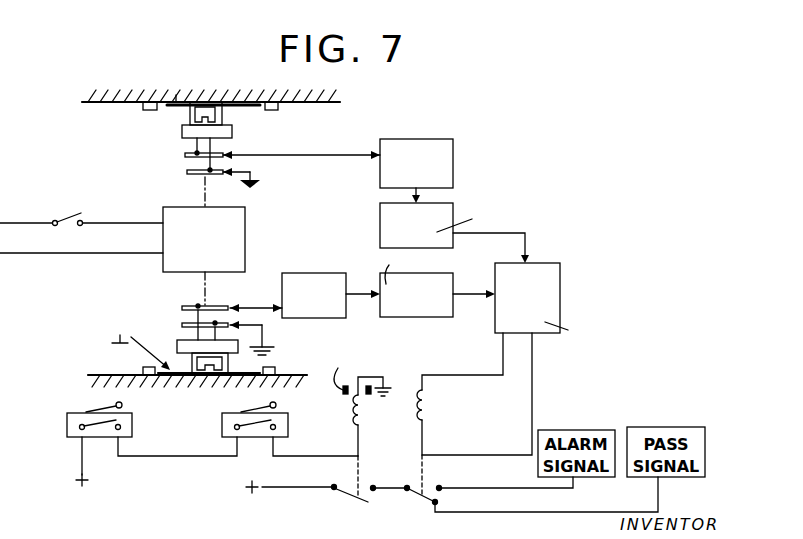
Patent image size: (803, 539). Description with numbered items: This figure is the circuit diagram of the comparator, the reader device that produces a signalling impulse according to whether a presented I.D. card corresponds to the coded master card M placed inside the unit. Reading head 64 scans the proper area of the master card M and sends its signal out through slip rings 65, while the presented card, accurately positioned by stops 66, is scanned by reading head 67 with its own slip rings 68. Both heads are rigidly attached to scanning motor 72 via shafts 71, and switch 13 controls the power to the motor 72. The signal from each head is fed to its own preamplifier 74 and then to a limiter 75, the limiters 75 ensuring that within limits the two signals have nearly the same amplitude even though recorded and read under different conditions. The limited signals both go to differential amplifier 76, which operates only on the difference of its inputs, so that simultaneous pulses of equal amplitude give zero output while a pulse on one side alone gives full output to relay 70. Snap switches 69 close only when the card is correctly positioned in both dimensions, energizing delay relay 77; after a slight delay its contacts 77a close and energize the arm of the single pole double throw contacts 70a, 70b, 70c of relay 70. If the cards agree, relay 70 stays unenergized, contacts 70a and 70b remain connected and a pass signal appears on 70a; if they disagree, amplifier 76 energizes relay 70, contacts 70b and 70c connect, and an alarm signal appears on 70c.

The master card M is at (176, 95).
The switch 13 is at (56, 219).
The reading head 64 is at (189, 118).
The slip rings 65 is at (185, 155).
The stops 66 is at (143, 107).
The reading head 67 is at (192, 367).
The slip rings 68 is at (182, 323).
The snap switches 69 is at (110, 437).
The relay 70 is at (427, 413).
The contact 70a is at (439, 505).
The contact 70b is at (415, 496).
The contact 70c is at (441, 486).
The shafts 71 is at (207, 292).
The scanning motor 72 is at (238, 244).
The preamplifiers 74 is at (442, 173).
The limiters 75 is at (443, 213).
The differential amplifier 76 is at (550, 288).
The delay relay 77 is at (363, 413).
The contacts 77a is at (364, 508).